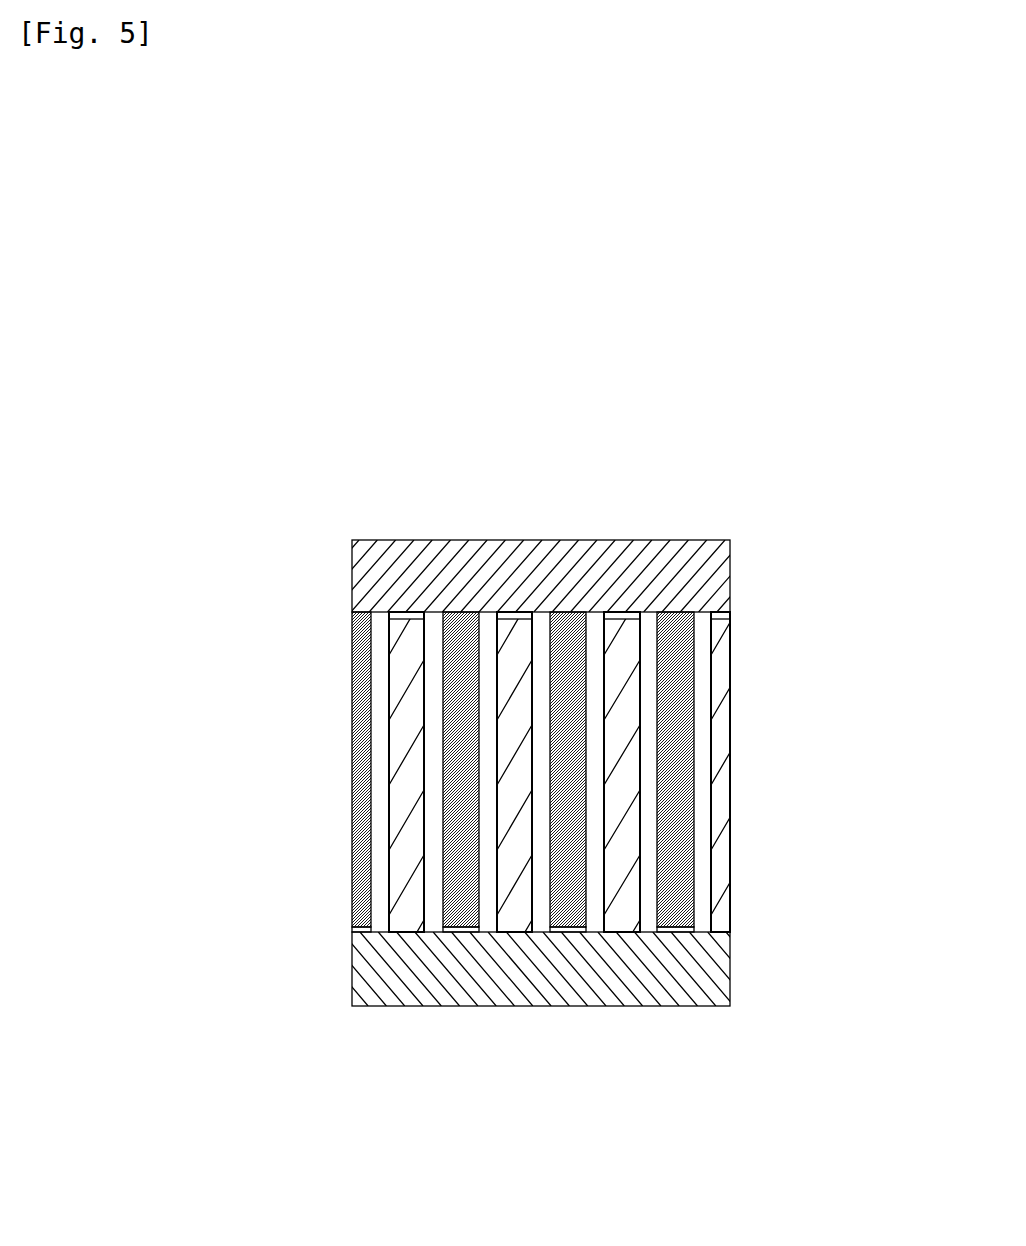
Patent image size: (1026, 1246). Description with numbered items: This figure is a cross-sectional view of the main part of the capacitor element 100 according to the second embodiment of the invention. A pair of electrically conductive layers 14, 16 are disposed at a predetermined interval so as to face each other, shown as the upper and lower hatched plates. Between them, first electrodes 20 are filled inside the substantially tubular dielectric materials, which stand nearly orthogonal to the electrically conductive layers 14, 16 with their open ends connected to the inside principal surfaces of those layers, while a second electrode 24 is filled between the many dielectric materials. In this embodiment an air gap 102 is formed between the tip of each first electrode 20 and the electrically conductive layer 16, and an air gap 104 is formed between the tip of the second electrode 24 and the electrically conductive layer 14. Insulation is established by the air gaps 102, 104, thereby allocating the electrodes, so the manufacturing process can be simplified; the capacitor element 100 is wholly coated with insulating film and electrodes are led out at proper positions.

The electrically conductive layer 14 is at (513, 558).
The electrically conductive layer 16 is at (720, 973).
The first electrode 20 is at (463, 736).
The second electrode 24 is at (520, 780).
The capacitor element 100 is at (817, 568).
The air gap 102 is at (448, 931).
The air gap 104 is at (402, 612).